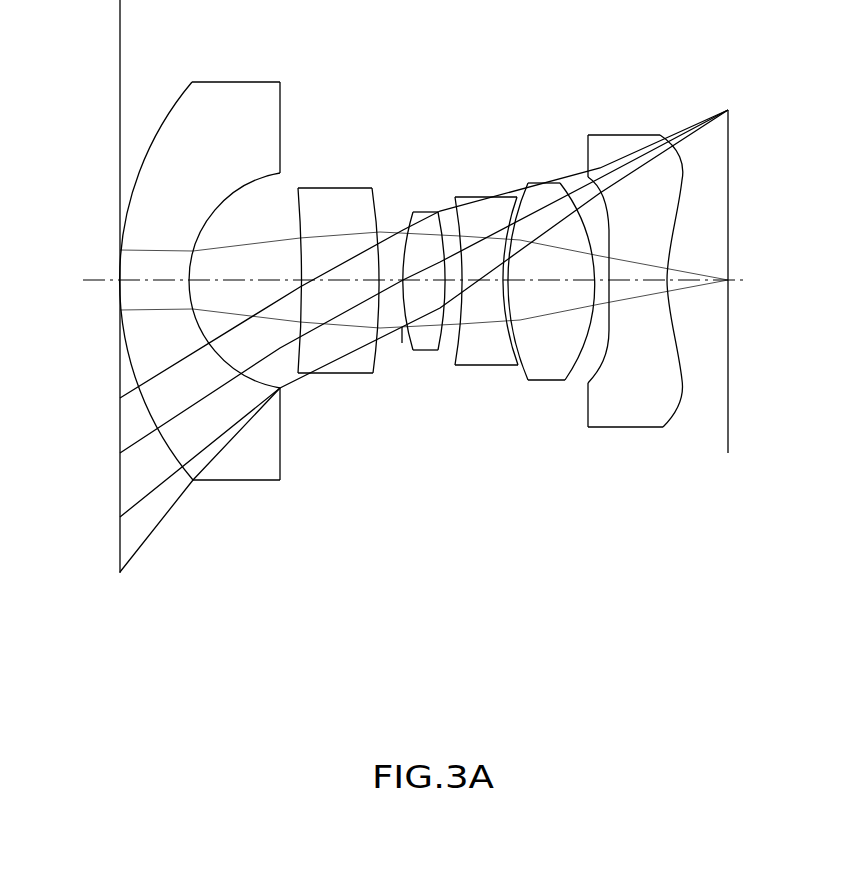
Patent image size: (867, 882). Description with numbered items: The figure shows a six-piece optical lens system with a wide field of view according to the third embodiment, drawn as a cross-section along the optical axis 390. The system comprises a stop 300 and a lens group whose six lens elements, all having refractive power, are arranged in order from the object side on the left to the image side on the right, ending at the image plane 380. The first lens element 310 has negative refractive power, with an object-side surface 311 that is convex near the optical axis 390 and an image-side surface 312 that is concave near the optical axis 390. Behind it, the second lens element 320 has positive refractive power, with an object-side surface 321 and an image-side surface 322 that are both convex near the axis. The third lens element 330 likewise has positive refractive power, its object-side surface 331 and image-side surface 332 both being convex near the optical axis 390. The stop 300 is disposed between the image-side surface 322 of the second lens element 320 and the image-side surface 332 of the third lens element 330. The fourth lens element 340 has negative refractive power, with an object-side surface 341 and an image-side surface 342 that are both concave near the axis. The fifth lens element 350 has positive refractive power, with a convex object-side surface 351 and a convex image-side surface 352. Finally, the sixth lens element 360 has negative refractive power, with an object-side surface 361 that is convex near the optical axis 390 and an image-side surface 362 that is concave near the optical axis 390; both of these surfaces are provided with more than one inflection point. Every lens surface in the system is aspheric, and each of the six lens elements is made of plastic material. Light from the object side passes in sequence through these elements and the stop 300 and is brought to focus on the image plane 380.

The stop 300 is at (405, 227).
The first lens element 310 is at (182, 296).
The object-side surface of first lens element 311 is at (116, 400).
The image-side surface of first lens element 312 is at (280, 447).
The second lens element 320 is at (337, 270).
The object-side surface of second lens element 321 is at (299, 376).
The image-side surface of second lens element 322 is at (376, 374).
The third lens element 330 is at (423, 284).
The object-side surface of third lens element 331 is at (404, 347).
The image-side surface of third lens element 332 is at (445, 337).
The fourth lens element 340 is at (490, 282).
The object-side surface of fourth lens element 341 is at (462, 340).
The image-side surface of fourth lens element 342 is at (513, 343).
The fifth lens element 350 is at (551, 298).
The object-side surface of fifth lens element 351 is at (531, 383).
The image-side surface of fifth lens element 352 is at (572, 372).
The sixth lens element 360 is at (639, 284).
The object-side surface of sixth lens element 361 is at (600, 377).
The image-side surface of sixth lens element 362 is at (678, 410).
The image plane 380 is at (729, 377).
The optical axis 390 is at (98, 278).